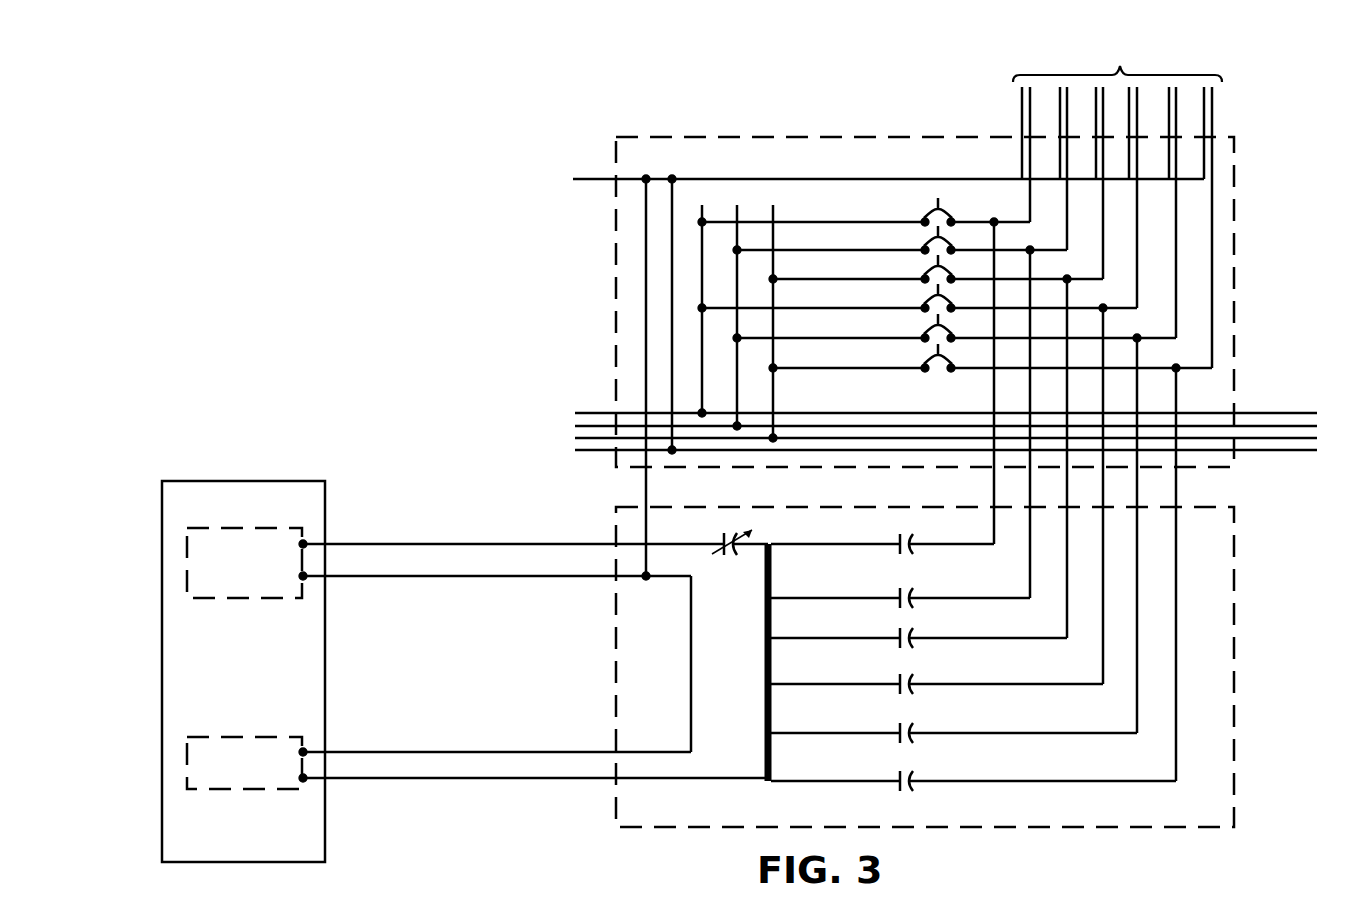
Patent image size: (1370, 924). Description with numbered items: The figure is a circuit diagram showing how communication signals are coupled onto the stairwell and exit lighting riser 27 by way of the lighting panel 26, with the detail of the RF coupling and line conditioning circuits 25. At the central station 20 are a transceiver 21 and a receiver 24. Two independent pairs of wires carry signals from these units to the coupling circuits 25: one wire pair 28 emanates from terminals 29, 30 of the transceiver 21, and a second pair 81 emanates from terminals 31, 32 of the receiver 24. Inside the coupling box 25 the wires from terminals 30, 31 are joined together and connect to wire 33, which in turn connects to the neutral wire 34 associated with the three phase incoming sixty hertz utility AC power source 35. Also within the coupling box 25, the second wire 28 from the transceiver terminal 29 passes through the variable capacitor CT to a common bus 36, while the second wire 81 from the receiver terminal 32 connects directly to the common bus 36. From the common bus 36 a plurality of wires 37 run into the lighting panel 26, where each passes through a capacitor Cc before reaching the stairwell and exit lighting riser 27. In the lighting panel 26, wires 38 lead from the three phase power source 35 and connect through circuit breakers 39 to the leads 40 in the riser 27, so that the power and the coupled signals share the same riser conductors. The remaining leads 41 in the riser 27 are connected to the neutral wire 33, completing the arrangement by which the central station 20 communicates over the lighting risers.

The central station 20 is at (268, 476).
The transceiver 21 is at (230, 523).
The receiver 24 is at (243, 792).
The RF coupling and line conditioning circuits 25 is at (1238, 779).
The lighting panel 26 is at (1245, 275).
The lighting riser 27 is at (1222, 90).
The pair of wires 28 is at (451, 572).
The transceiver terminal 29 is at (310, 539).
The transceiver terminal 30 is at (310, 582).
The receiver terminal 31 is at (308, 748).
The receiver terminal 32 is at (308, 783).
The wire 33 is at (670, 245).
The neutral wire 34 is at (1310, 456).
The utility AC power source 35 is at (1280, 437).
The common bus 36 is at (760, 630).
The wires 37 is at (1110, 477).
The wires 38 is at (767, 380).
The circuit breakers 39 is at (935, 354).
The leads 40 is at (1107, 95).
The leads 41 is at (1092, 110).
The pair of wires 81 is at (498, 758).